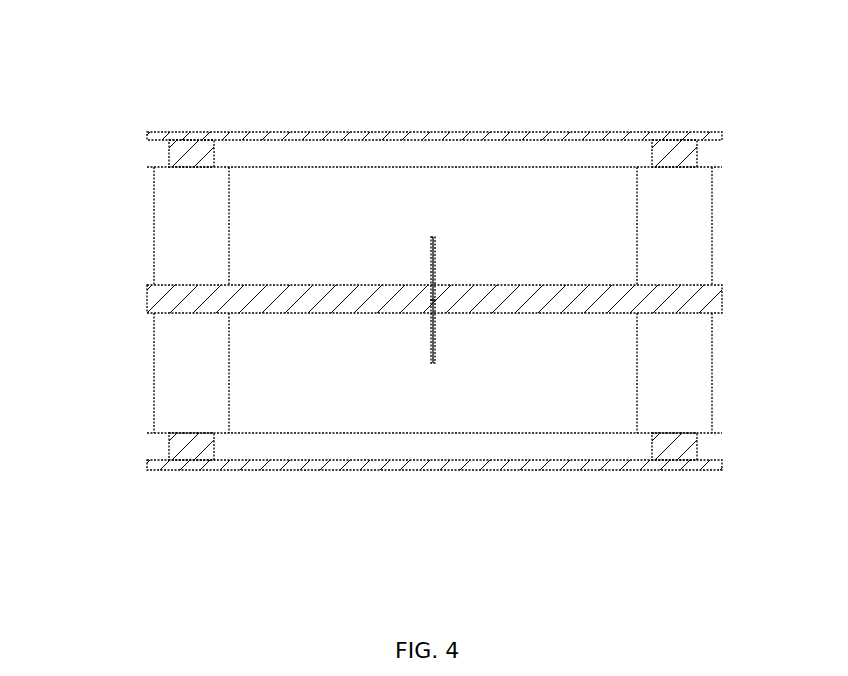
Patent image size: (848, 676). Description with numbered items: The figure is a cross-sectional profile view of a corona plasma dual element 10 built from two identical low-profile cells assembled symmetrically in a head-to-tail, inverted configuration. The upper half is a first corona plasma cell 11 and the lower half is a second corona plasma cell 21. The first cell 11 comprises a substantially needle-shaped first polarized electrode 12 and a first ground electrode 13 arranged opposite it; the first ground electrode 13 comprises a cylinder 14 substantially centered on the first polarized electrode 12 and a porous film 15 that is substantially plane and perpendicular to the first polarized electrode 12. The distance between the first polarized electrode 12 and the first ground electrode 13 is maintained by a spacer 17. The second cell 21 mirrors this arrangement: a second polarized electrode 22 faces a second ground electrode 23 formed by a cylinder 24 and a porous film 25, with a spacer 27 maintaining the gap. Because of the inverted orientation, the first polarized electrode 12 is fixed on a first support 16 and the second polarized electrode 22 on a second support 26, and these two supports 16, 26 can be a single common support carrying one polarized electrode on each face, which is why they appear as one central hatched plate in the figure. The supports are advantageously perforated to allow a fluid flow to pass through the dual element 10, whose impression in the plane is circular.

The corona plasma dual element 10 is at (372, 85).
The first corona plasma cell 11 is at (90, 130).
The first polarized electrode 12 is at (435, 258).
The first ground electrode 13 is at (210, 142).
The cylinder 14 is at (652, 156).
The porous film 15 is at (516, 133).
The first support 16 is at (434, 269).
The spacer 17 is at (704, 245).
The second corona plasma cell 21 is at (90, 305).
The second polarized electrode 22 is at (435, 342).
The second ground electrode 23 is at (658, 460).
The cylinder 24 is at (212, 447).
The porous film 25 is at (506, 463).
The second support 26 is at (375, 298).
The spacer 27 is at (704, 355).